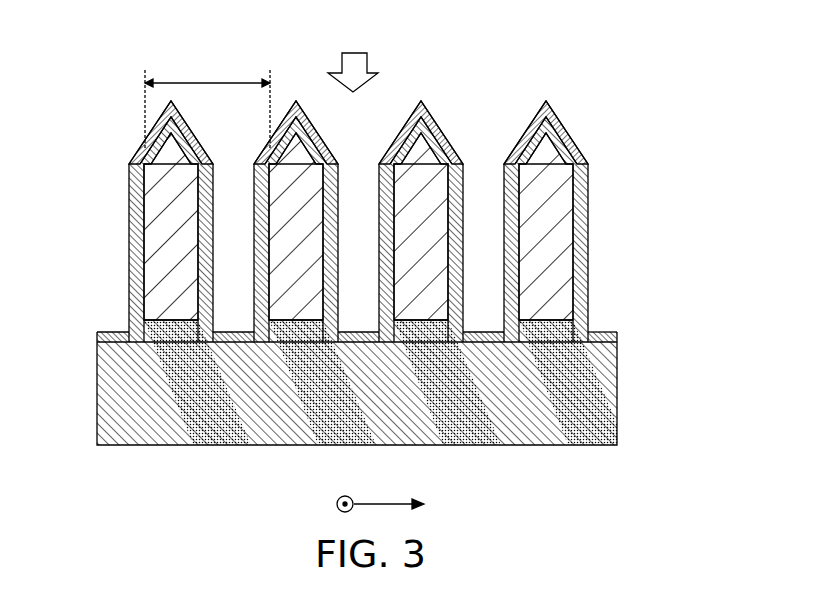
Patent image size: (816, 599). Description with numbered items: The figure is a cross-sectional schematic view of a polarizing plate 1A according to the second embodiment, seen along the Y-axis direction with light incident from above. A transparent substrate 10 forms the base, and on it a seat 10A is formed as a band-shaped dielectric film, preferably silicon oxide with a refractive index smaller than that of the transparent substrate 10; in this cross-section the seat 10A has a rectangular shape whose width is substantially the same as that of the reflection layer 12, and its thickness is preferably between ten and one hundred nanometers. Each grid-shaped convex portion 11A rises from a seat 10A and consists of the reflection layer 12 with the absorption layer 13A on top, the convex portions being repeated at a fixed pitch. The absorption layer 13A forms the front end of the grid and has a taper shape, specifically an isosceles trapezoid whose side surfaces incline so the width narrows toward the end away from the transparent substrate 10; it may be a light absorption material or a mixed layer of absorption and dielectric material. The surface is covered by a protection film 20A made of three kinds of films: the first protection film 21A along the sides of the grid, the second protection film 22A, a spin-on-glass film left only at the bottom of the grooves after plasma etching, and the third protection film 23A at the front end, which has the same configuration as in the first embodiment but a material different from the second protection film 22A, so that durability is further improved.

The polarizing plate 1A is at (602, 42).
The transparent substrate 10 is at (617, 402).
The seat 10A is at (172, 322).
The grid-shaped convex portion 11A is at (637, 244).
The reflection layer 12 is at (144, 226).
The absorption layer 13A is at (130, 173).
The protection film 20A is at (637, 221).
The first protection film 21A is at (587, 228).
The second protection film 22A is at (639, 306).
The third protection film 23A is at (574, 143).